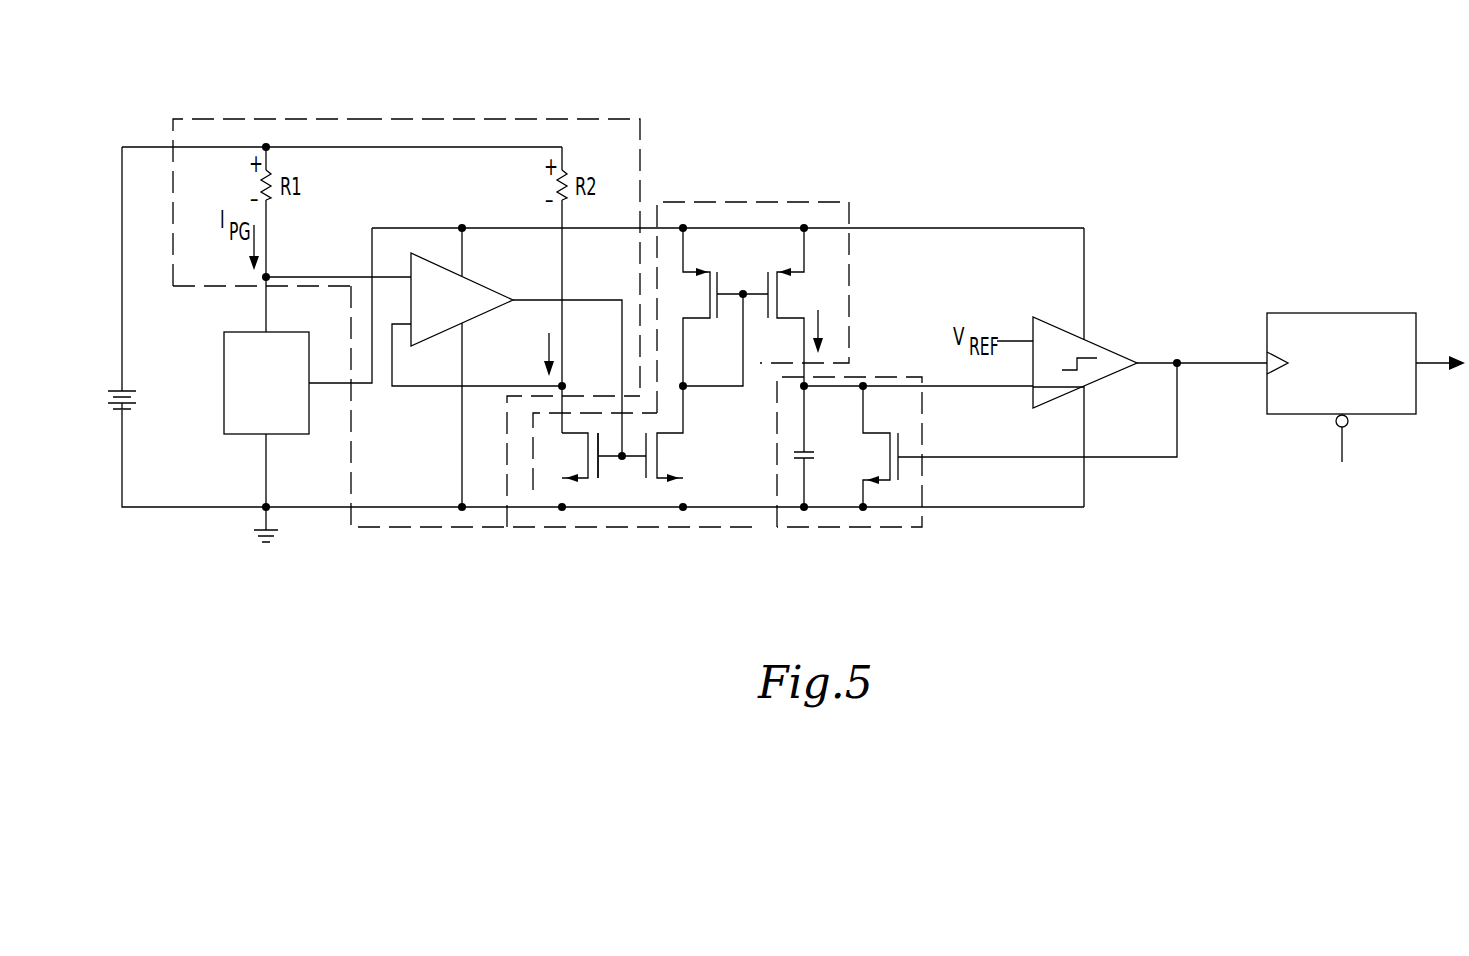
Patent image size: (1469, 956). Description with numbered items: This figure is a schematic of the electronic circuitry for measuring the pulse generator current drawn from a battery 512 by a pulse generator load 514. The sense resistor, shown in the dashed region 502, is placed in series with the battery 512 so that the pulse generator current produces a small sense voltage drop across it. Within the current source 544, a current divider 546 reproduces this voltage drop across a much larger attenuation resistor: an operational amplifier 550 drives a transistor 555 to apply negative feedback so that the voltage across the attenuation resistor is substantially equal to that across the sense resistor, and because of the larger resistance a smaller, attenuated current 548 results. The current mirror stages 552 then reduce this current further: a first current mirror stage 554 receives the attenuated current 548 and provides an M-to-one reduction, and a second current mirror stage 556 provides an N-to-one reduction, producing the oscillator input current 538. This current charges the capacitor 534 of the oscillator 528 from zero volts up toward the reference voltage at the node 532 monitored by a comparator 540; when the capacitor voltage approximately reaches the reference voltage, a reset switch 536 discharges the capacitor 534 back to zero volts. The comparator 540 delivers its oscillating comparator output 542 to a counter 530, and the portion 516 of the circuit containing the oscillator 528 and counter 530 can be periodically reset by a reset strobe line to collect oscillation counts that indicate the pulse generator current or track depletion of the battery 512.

The sensed load circuit 502 is at (199, 76).
The battery 512 is at (132, 389).
The pulse generator load 514 is at (287, 332).
The current-to-frequency converter circuit 516 is at (868, 101).
The oscillator 528 is at (892, 378).
The counter 530 is at (1394, 312).
The oscillator node 532 is at (905, 389).
The capacitor 534 is at (808, 448).
The reset switch 536 is at (902, 470).
The oscillator input current 538 is at (820, 318).
The comparator 540 is at (1117, 356).
The comparator output 542 is at (1214, 363).
The current source 544 is at (627, 47).
The current divider 546 is at (612, 118).
The attenuated current 548 is at (552, 340).
The operational amplifier 550 is at (497, 292).
The current mirror stages 552 is at (821, 201).
The first current mirror stage 554 is at (619, 519).
The transistor 555 is at (601, 468).
The second current mirror stage 556 is at (741, 282).